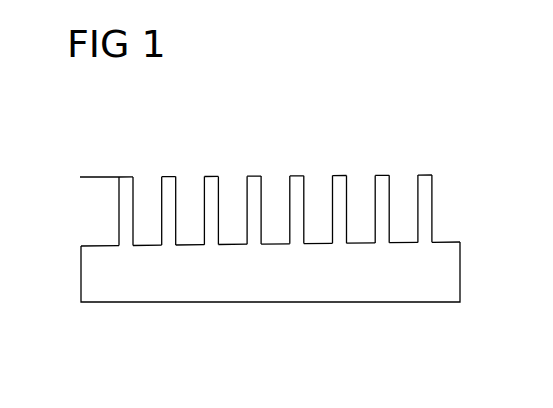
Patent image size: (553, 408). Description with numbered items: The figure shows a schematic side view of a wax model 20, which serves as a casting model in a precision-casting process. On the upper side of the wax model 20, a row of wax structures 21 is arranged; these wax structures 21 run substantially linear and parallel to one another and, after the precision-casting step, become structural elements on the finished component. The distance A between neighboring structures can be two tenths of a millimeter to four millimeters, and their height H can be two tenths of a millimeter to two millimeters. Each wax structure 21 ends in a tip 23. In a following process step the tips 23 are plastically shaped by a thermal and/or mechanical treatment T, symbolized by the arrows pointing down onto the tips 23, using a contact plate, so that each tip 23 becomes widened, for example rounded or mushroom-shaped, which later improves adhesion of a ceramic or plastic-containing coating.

The wax model 20 is at (449, 273).
The wax structures 21 is at (427, 218).
The tips 23 is at (120, 177).
The thermal and/or mechanical treatment T is at (131, 175).
The height H is at (89, 177).
The distance A is at (162, 223).